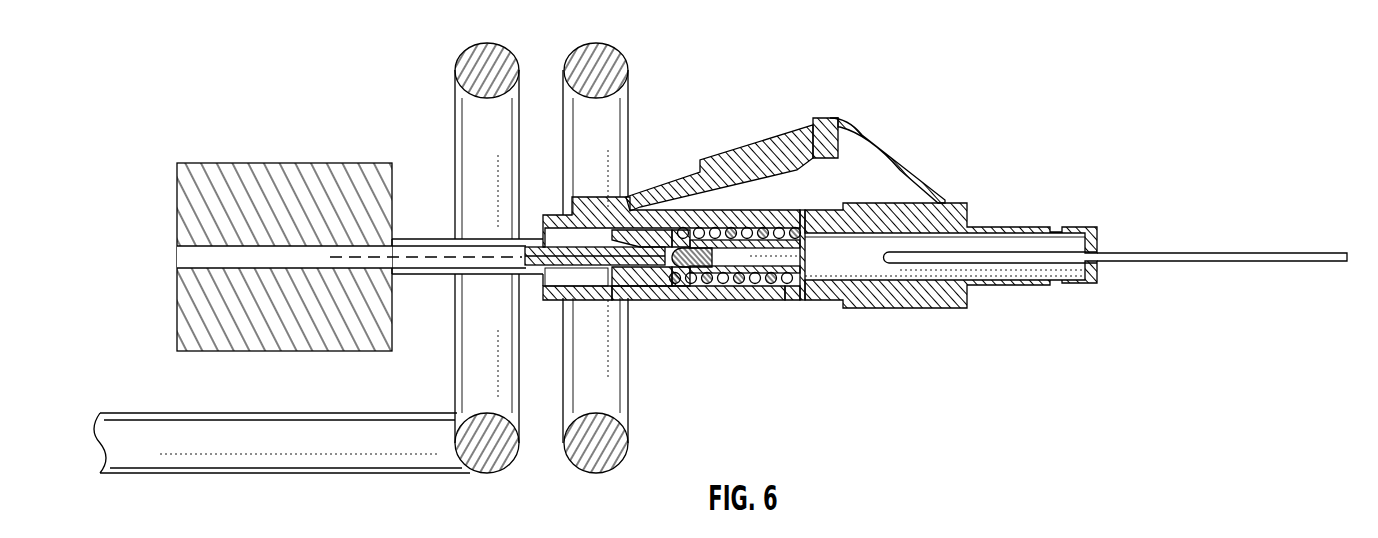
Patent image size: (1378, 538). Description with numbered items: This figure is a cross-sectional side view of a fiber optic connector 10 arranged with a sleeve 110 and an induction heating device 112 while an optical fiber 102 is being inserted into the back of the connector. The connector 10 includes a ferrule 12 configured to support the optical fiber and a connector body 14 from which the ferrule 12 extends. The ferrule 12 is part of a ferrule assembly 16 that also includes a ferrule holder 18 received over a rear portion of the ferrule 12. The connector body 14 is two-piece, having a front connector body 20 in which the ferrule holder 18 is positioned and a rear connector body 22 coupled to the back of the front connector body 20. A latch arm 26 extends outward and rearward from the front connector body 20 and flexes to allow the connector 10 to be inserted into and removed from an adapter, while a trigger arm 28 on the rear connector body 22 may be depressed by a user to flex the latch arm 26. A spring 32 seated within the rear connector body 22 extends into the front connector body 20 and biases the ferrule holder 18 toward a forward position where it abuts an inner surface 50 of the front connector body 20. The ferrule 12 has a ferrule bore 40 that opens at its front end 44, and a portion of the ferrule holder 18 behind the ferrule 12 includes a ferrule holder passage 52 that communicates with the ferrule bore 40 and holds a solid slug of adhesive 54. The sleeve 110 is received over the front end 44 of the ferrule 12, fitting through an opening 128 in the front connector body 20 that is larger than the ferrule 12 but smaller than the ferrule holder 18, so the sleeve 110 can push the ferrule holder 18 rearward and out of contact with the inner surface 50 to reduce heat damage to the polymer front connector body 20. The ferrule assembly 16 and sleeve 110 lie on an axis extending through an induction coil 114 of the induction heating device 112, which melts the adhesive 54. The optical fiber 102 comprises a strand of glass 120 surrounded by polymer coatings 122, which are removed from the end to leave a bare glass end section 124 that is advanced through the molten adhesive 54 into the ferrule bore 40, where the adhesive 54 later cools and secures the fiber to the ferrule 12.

The connector 10 is at (845, 90).
The ferrule 12 is at (614, 228).
The connector body 14 is at (809, 137).
The ferrule assembly 16 is at (626, 270).
The ferrule holder 18 is at (668, 286).
The front connector body 20 is at (590, 195).
The rear connector body 22 is at (935, 312).
The latch arm 26 is at (752, 152).
The trigger arm 28 is at (948, 190).
The spring 32 is at (795, 291).
The ferrule bore 40 is at (570, 232).
The front end 44 is at (516, 280).
The inner surface 50 is at (650, 229).
The ferrule holder passage 52 is at (738, 233).
The adhesive 54 is at (741, 298).
The optical fiber 102 is at (1139, 265).
The sleeve 110 is at (421, 238).
The induction heating device 112 is at (197, 480).
The induction coil 114 is at (592, 42).
The strand of glass 120 is at (861, 246).
The polymer coatings 122 is at (1043, 250).
The glass end section 124 is at (804, 214).
The opening 128 is at (600, 293).